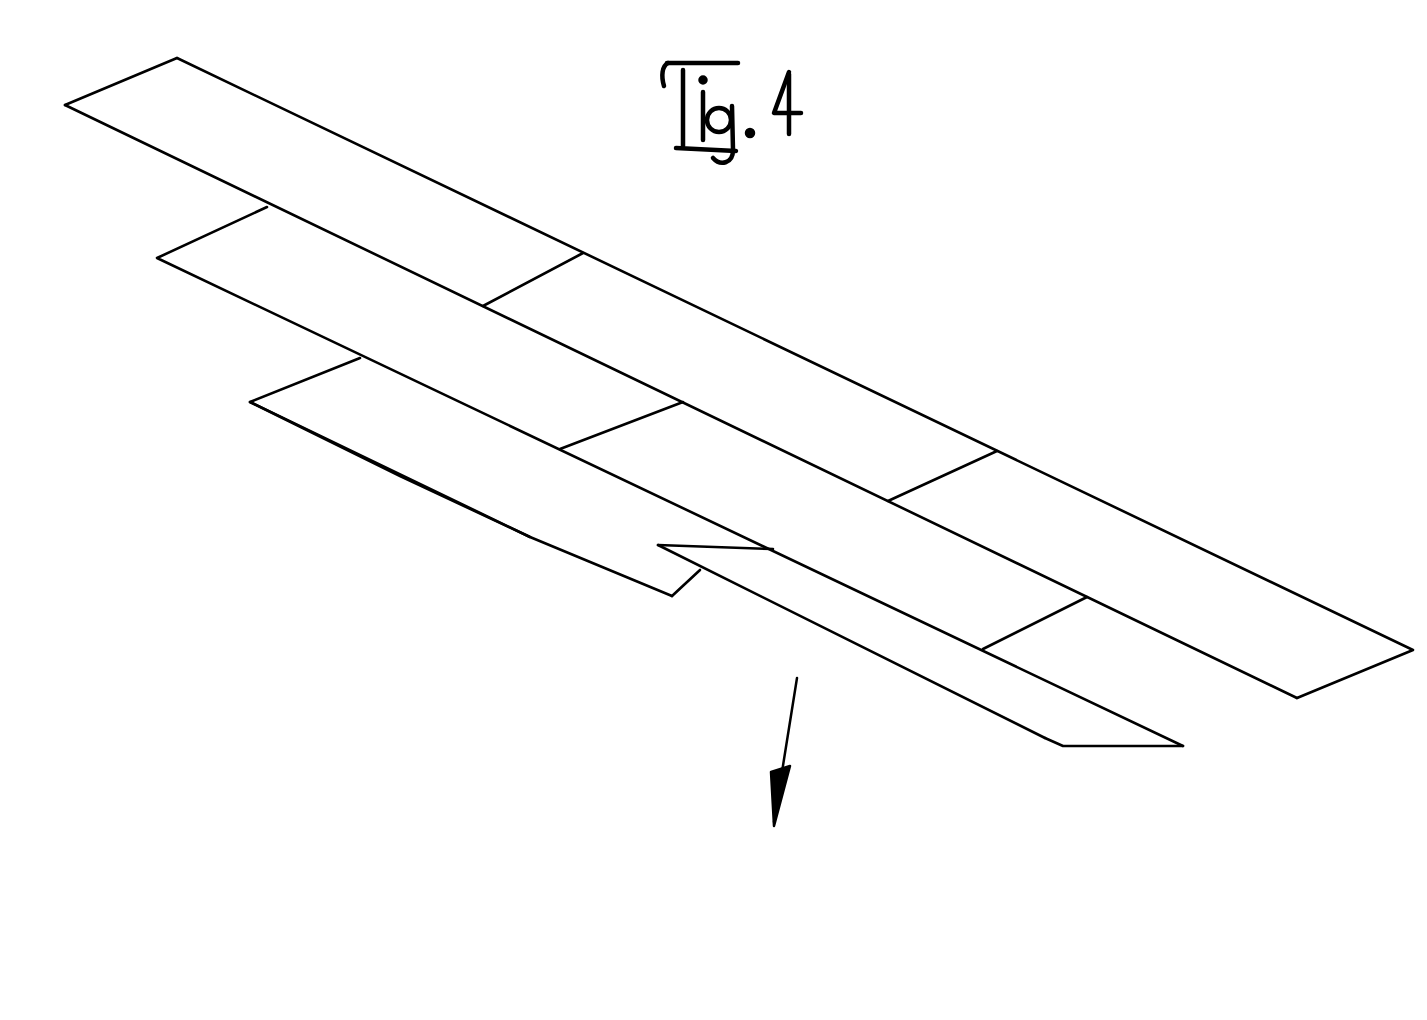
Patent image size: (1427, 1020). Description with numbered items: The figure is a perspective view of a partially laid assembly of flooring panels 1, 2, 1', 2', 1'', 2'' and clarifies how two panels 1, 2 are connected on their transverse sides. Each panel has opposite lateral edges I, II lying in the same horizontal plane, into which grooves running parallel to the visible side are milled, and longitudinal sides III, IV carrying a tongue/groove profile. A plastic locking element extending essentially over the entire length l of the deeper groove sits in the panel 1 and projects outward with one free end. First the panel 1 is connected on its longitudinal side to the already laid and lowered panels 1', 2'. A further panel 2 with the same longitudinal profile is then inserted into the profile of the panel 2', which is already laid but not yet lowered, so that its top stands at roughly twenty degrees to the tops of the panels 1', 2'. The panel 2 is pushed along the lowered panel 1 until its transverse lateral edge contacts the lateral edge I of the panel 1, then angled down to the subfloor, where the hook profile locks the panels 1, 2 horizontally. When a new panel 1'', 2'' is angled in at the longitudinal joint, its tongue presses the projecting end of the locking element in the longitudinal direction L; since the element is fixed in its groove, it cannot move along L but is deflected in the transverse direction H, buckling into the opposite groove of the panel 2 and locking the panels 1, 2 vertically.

The flooring panel 1 is at (670, 476).
The flooring panel 1' is at (739, 378).
The flooring panel 1'' is at (407, 496).
The flooring panel 2 is at (461, 516).
The flooring panel 2' is at (681, 401).
The flooring panel 2'' is at (851, 649).
The lateral edge I is at (673, 596).
The lateral edge II is at (713, 548).
The longitudinal side III is at (760, 245).
The longitudinal side IV is at (1043, 738).
The length of the groove l is at (1076, 686).
The longitudinal direction L is at (1067, 422).
The transverse direction H is at (1190, 469).